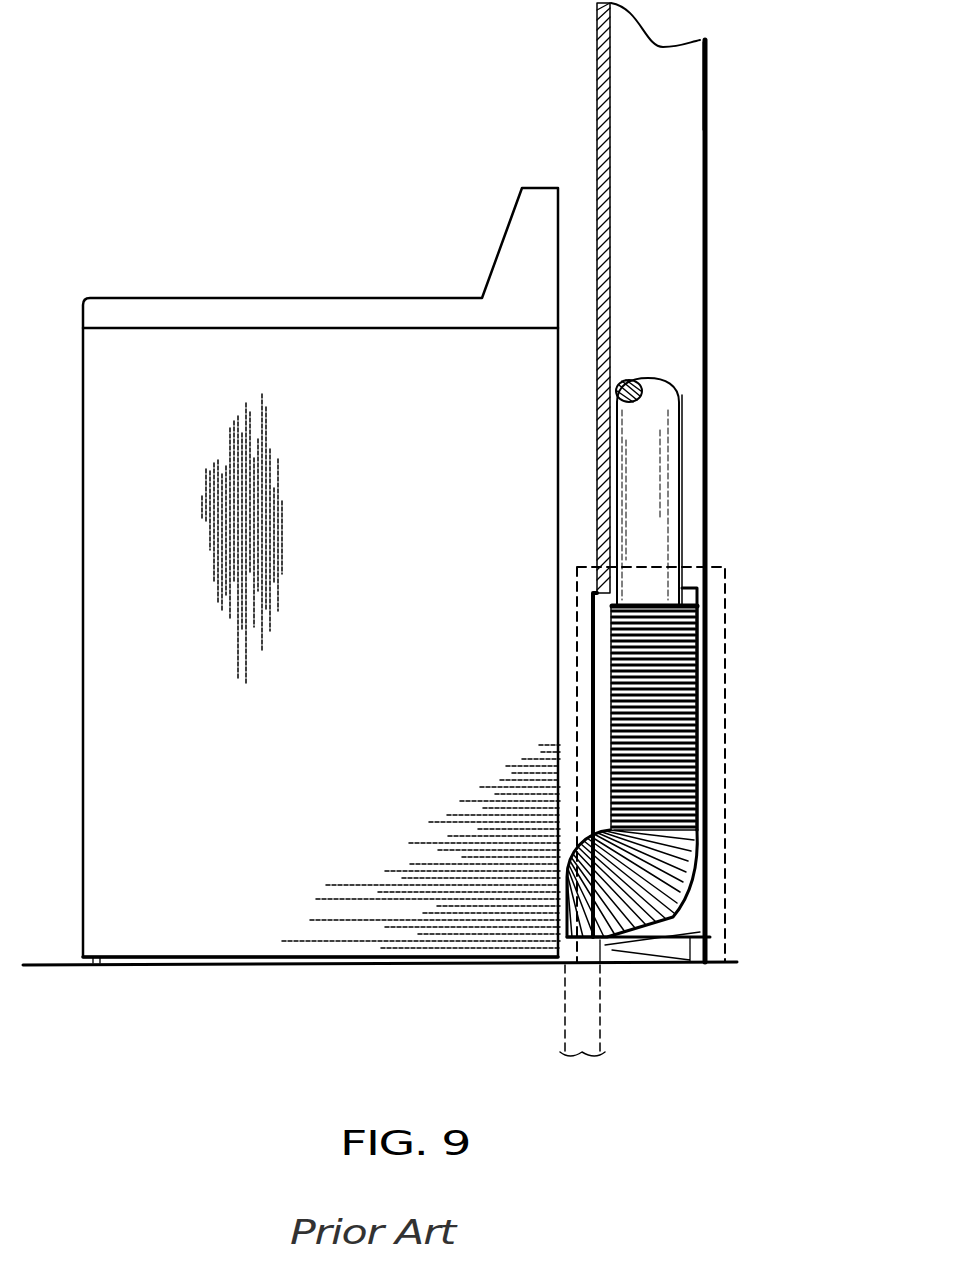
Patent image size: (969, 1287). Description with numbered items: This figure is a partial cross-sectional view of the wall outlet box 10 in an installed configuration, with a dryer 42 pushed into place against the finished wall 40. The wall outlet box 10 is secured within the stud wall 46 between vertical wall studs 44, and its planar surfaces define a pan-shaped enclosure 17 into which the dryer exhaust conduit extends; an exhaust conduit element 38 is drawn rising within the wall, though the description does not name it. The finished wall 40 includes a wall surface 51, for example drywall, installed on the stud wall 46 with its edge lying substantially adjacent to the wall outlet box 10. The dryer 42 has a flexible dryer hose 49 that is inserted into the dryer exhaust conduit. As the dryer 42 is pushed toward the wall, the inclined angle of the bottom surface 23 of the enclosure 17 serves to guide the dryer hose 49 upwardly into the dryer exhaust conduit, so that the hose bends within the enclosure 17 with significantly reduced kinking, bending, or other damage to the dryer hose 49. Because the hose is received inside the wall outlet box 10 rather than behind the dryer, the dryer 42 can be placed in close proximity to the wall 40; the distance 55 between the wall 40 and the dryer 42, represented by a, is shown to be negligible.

The wall outlet box 10 is at (727, 601).
The pan-shaped enclosure 17 is at (673, 915).
The inclined lower surface 23 is at (685, 935).
The inner exhaust pipe 38 is at (660, 493).
The finished wall 40 is at (566, 68).
The dryer 42 is at (215, 928).
The wall stud 44 is at (690, 272).
The stud wall 46 is at (708, 128).
The flexible dryer hose 49 is at (700, 737).
The wall surface 51 is at (597, 140).
The distance 55 is at (582, 990).